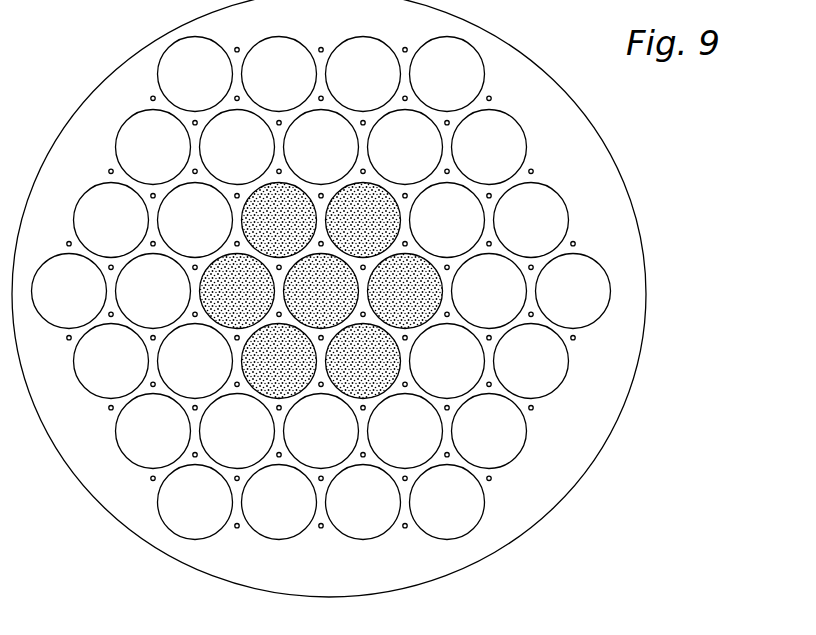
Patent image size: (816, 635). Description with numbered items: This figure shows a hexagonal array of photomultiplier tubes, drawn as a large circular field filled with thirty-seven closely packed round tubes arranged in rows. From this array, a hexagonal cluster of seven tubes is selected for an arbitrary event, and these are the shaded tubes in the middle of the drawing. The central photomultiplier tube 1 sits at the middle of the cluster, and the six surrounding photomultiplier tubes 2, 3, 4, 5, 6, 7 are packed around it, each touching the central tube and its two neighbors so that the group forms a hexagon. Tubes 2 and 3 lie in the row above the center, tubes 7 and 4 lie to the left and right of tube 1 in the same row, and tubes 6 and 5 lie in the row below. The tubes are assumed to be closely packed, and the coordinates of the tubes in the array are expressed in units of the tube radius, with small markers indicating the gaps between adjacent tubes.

The photomultiplier tube 1 is at (321, 291).
The photomultiplier tube 2 is at (279, 220).
The photomultiplier tube 3 is at (363, 220).
The photomultiplier tube 4 is at (405, 291).
The photomultiplier tube 5 is at (363, 361).
The photomultiplier tube 6 is at (279, 361).
The photomultiplier tube 7 is at (237, 291).